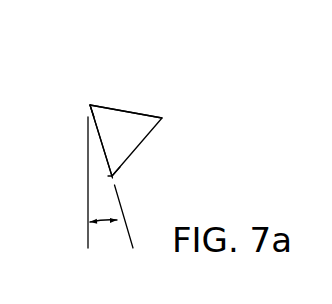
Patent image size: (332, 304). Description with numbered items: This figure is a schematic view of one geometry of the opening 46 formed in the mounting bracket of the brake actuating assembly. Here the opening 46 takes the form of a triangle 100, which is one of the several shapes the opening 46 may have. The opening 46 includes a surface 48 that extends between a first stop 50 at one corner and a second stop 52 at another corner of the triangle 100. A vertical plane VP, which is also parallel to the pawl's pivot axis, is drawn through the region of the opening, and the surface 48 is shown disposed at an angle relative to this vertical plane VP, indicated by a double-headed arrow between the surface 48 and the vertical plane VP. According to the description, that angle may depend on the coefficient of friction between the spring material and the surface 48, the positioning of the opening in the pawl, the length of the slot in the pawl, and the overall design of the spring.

The opening 46 is at (94, 81).
The triangle 100 is at (133, 113).
The first stop 50 is at (88, 104).
The surface 48 is at (94, 122).
The second stop 52 is at (110, 177).
The vertical plane VP is at (88, 233).